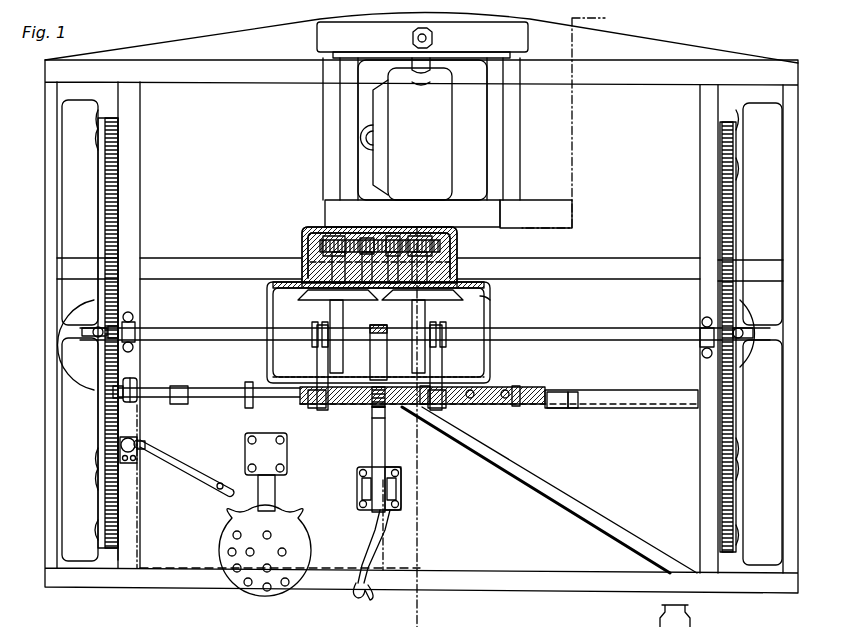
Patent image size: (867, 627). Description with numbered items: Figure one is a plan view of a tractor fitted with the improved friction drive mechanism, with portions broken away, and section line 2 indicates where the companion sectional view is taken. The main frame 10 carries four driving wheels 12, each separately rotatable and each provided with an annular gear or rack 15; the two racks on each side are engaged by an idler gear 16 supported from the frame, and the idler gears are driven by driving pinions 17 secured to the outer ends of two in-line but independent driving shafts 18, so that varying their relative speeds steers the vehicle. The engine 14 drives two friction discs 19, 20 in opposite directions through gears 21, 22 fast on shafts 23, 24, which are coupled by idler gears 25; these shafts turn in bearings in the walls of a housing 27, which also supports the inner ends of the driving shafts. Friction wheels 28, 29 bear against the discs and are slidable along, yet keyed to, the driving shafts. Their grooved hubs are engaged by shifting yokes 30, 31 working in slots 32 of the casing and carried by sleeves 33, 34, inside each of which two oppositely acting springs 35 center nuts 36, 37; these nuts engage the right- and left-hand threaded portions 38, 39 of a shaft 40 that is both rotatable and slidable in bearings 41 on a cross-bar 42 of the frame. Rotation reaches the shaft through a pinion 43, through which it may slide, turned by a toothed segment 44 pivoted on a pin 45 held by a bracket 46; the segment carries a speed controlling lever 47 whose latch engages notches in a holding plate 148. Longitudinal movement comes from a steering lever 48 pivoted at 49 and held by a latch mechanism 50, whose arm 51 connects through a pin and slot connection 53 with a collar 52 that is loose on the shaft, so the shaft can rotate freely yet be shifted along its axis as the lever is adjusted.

The section line 2 is at (573, 119).
The main frame 10 is at (655, 80).
The driving wheels 12 is at (65, 116).
The engine 14 is at (422, 111).
The annular gear or rack 15 is at (118, 182).
The idler gear 16 is at (108, 296).
The driving pinions 17 is at (140, 317).
The driving shafts 18 is at (237, 324).
The friction disc 19 is at (467, 300).
The friction disc 20 is at (310, 299).
The gear 21 is at (412, 270).
The gear 22 is at (332, 240).
The shaft 23 is at (425, 262).
The shaft 24 is at (320, 262).
The idler gears 25 is at (340, 238).
The housing 27 is at (490, 300).
The friction wheel 28 is at (414, 312).
The friction wheel 29 is at (340, 312).
The shifting yoke 30 is at (442, 375).
The shifting yoke 31 is at (322, 380).
The slots 32 is at (490, 380).
The sleeve 33 is at (460, 425).
The sleeve 34 is at (265, 404).
The springs 35 is at (470, 386).
The nut 36 is at (462, 405).
The nut 37 is at (272, 387).
The threaded portion 38 is at (518, 400).
The threaded portion 39 is at (245, 400).
The shaft 40 is at (585, 385).
The bearings 41 is at (178, 400).
The cross-bar 42 is at (660, 408).
The pinion 43 is at (375, 407).
The toothed segment 44 is at (377, 440).
The shaft or pin 45 is at (360, 488).
The bracket 46 is at (357, 505).
The speed controlling lever 47 is at (380, 540).
The steering lever 48 is at (190, 463).
The pivotal support 49 is at (130, 465).
The latch mechanism 50 is at (137, 448).
The arm 51 is at (120, 415).
The collar 52 is at (137, 388).
The pin and slot connection 53 is at (115, 397).
The holding plate 148 is at (400, 493).